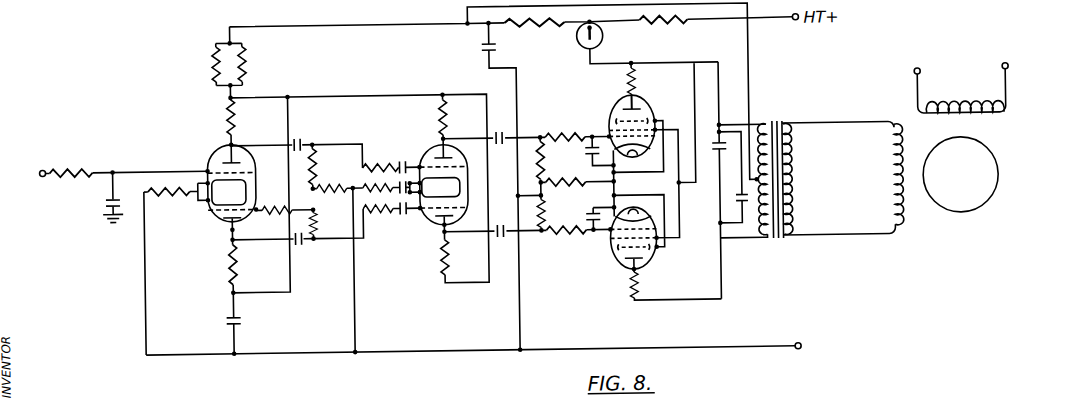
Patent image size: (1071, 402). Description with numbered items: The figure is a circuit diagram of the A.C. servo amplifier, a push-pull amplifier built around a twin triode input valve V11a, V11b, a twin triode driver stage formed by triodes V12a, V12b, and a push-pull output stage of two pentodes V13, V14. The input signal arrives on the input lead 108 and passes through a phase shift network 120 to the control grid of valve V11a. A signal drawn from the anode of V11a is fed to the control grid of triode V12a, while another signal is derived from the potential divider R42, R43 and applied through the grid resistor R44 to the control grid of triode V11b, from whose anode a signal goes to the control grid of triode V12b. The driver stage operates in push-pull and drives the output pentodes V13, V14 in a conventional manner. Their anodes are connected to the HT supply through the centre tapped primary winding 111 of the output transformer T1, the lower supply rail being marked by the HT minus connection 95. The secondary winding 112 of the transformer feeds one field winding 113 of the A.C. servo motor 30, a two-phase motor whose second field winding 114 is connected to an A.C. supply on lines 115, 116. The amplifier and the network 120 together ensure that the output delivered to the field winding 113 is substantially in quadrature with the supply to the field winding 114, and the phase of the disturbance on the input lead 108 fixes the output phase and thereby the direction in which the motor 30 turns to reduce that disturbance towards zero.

The input lead 108 is at (51, 166).
The phase shift network 120 is at (95, 184).
The negative supply line (HT-) 95 is at (758, 350).
The centre tapped primary winding 111 is at (760, 243).
The secondary winding 112 is at (797, 184).
The field winding 113 is at (887, 191).
The field winding 114 is at (981, 109).
The A.C. supply line 115 is at (918, 88).
The A.C. supply line 116 is at (1007, 85).
The A.C. servo motor 30 is at (1027, 163).
The twin triode input valve section V11a is at (239, 135).
The twin triode input valve section V11b is at (233, 226).
The triode of driver stage V12a is at (426, 163).
The triode of driver stage V12b is at (417, 254).
The output pentode V13 is at (613, 121).
The output pentode V14 is at (621, 270).
The potential divider resistor R42 is at (327, 166).
The potential divider resistor R43 is at (328, 216).
The grid resistor R44 is at (284, 203).
The output transformer T1 is at (777, 169).